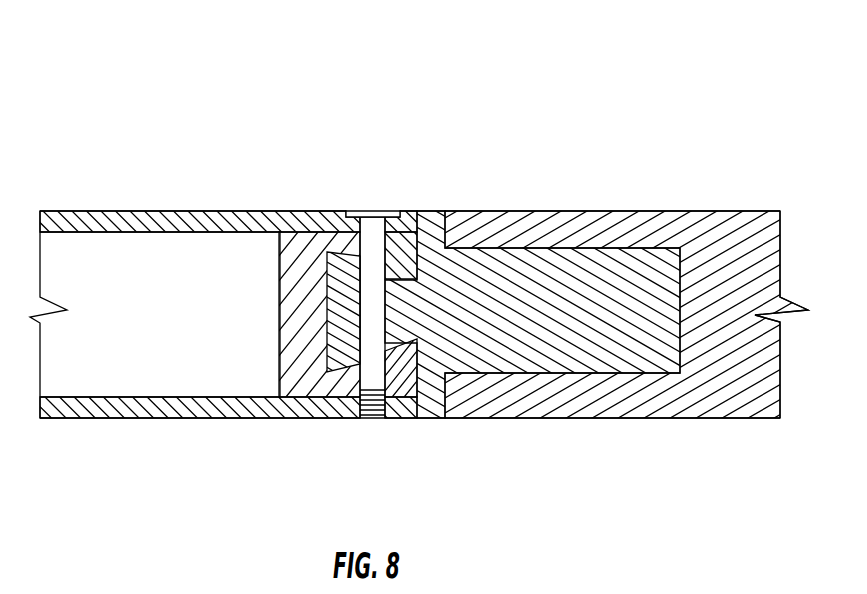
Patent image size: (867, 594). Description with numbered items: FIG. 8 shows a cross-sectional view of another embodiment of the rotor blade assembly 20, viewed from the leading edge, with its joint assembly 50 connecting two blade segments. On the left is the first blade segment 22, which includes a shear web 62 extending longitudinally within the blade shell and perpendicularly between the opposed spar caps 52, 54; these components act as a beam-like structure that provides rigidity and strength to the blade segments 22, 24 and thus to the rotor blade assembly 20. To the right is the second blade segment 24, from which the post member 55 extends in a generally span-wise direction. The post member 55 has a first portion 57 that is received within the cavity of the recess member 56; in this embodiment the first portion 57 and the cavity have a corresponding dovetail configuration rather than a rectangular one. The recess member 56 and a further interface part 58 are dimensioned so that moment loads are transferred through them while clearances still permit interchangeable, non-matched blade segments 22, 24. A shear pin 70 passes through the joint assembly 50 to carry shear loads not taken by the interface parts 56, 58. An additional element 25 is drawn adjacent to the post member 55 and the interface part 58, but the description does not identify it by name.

The rotor blade assembly 20 is at (151, 73).
The first blade segment 22 is at (237, 299).
The second blade segment 24 is at (697, 205).
The insert block 25 is at (419, 243).
The joint assembly 50 is at (322, 316).
The spar cap 52 is at (184, 203).
The spar cap 54 is at (165, 426).
The post member 55 is at (344, 265).
The recess member 56 is at (297, 384).
The first portion 57 is at (332, 358).
The interface part 58 is at (608, 348).
The shear web 62 is at (172, 325).
The shear pin 70 is at (382, 211).